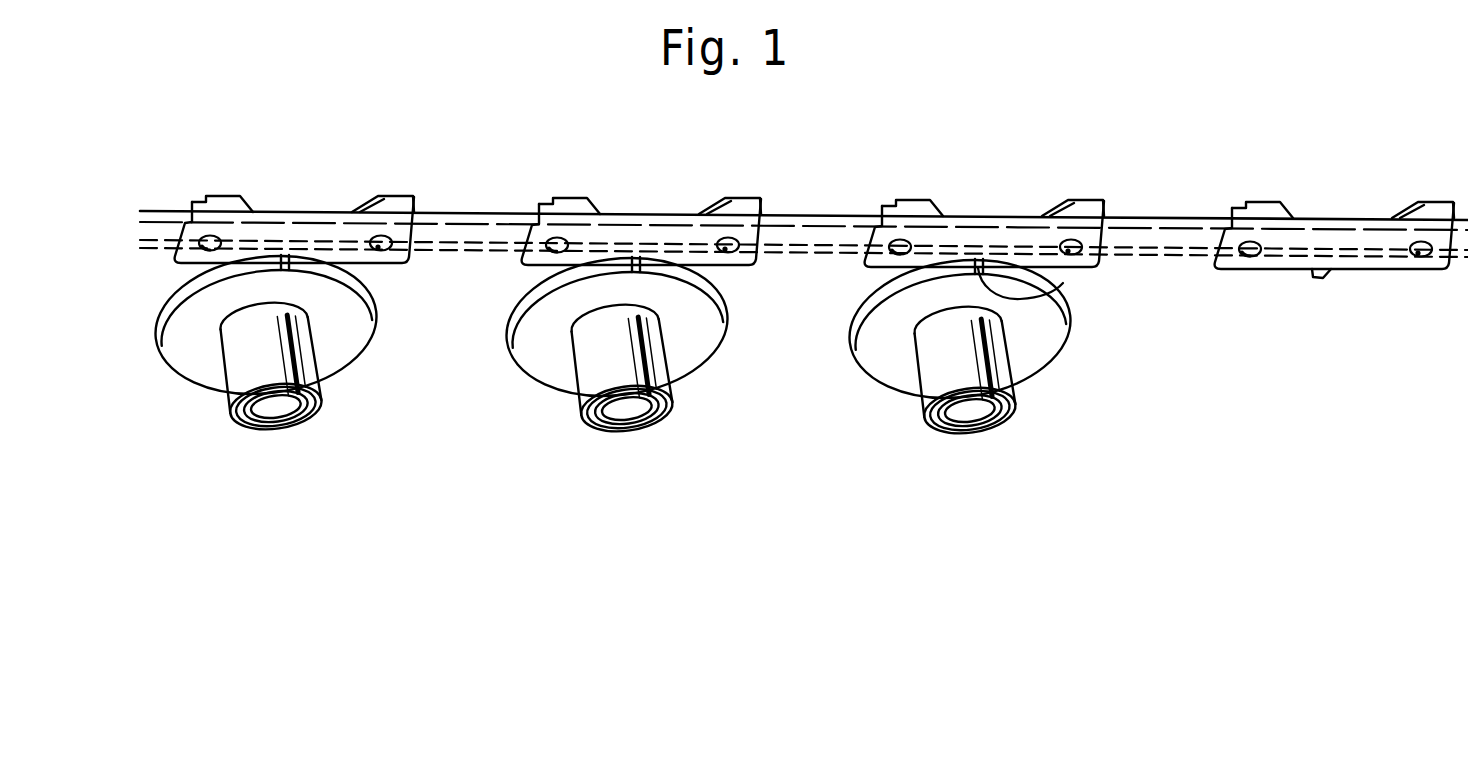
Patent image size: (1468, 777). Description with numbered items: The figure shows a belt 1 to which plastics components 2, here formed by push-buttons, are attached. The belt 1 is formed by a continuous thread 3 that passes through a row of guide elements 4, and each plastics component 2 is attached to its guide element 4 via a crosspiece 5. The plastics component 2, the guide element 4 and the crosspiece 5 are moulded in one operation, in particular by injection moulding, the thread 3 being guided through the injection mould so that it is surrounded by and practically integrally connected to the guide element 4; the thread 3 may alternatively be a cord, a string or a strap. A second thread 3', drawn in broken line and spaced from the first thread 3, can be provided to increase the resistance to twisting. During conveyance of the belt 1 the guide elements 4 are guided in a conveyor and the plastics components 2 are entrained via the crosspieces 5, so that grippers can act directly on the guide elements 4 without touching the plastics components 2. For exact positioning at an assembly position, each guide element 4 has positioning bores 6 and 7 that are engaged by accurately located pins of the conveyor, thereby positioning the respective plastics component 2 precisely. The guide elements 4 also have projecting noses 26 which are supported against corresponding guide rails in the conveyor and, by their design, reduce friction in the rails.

The belt 1 is at (1031, 186).
The plastics component 2 is at (597, 378).
The continuous thread 3 is at (814, 211).
The second thread 3' is at (804, 296).
The guide element 4 is at (307, 216).
The crosspiece 5 is at (1063, 290).
The positioning bore 6 is at (746, 256).
The positioning bore 7 is at (537, 263).
The projecting nose 26 is at (571, 202).